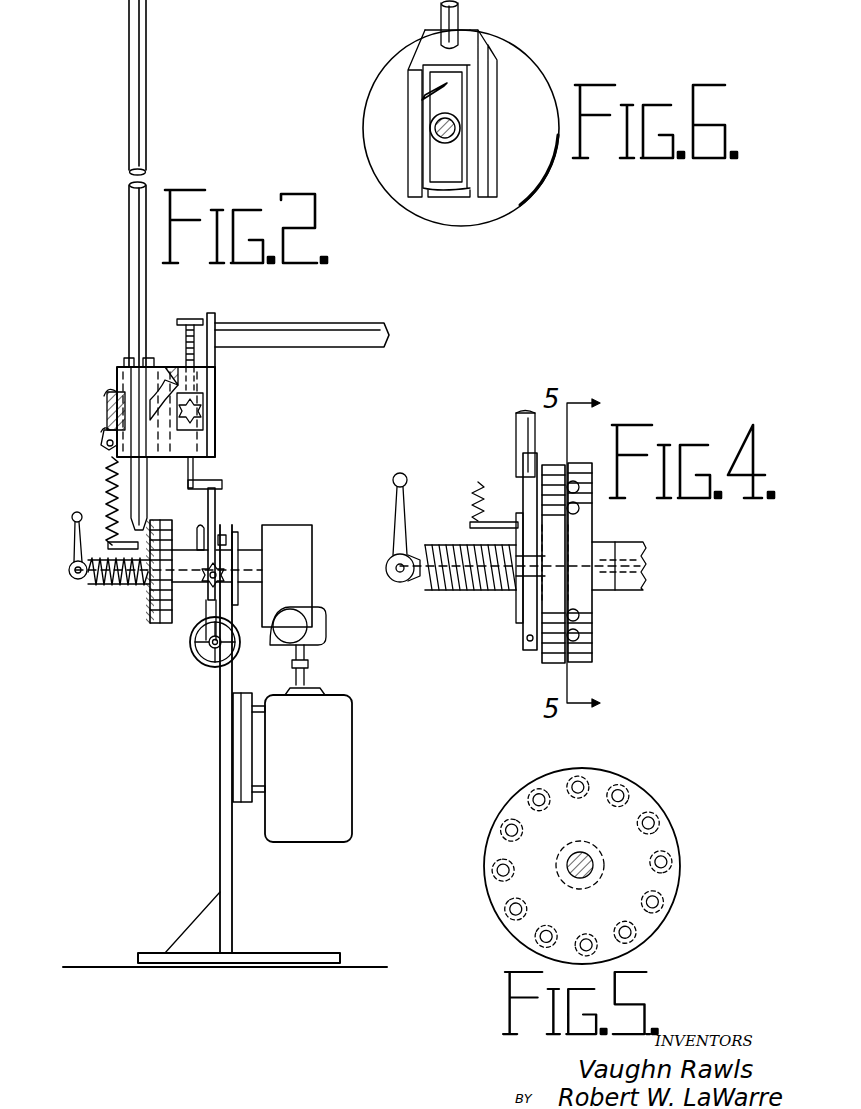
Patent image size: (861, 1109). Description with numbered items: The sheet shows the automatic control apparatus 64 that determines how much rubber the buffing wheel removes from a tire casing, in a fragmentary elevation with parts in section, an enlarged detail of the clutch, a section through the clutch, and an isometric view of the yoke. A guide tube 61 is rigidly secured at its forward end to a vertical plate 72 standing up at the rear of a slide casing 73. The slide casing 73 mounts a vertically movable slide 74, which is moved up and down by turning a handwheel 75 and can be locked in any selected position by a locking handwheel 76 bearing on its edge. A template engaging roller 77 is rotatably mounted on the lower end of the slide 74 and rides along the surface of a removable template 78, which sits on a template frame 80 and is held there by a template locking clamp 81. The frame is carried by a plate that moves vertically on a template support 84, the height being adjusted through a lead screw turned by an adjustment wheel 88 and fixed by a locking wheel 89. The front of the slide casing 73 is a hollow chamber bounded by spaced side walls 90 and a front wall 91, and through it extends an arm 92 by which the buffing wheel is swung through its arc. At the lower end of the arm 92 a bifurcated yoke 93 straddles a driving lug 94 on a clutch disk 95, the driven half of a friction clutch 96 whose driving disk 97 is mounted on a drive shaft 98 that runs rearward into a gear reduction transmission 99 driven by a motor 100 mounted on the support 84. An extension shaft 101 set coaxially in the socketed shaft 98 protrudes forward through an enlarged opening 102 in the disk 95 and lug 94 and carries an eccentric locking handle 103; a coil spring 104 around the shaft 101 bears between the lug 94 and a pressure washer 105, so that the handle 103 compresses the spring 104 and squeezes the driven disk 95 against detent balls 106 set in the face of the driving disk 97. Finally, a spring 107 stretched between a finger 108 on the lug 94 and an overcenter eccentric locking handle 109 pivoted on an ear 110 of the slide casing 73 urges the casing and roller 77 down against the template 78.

In FIG. 2, the guide tube 61 is at (337, 323).
In FIG. 2, the control apparatus 64 is at (262, 496).
In FIG. 2, the vertical plate 72 is at (215, 383).
In FIG. 2, the slide casing 73 is at (216, 436).
In FIG. 2, the slide 74 is at (196, 470).
In FIG. 2, the handwheel 75 is at (190, 319).
In FIG. 2, the locking handwheel 76 is at (203, 410).
In FIG. 2, the template engaging roller 77 is at (222, 478).
In FIG. 2, the template 78 is at (215, 514).
In FIG. 2, the template frame 80 is at (238, 534).
In FIG. 2, the template locking clamp 81 is at (197, 545).
In FIG. 2, the template support 84 is at (219, 730).
In FIG. 2, the adjustment wheel 88 is at (195, 658).
In FIG. 2, the locking wheel 89 is at (205, 585).
In FIG. 2, the side walls 90 is at (126, 364).
In FIG. 2, the front wall 91 is at (110, 395).
In FIG. 2, the arm 92 is at (129, 310).
In FIG. 4, the arm 92 is at (516, 424).
In FIG. 6, the arm 92 is at (458, 18).
In FIG. 4, the bifurcated yoke 93 is at (525, 640).
In FIG. 6, the bifurcated yoke 93 is at (497, 90).
In FIG. 4, the driving lug 94 is at (518, 618).
In FIG. 6, the driving lug 94 is at (418, 140).
In FIG. 4, the clutch disk 95 is at (553, 663).
In FIG. 6, the clutch disk 95 is at (542, 195).
In FIG. 2, the friction clutch 96 is at (152, 640).
In FIG. 4, the driving disk 97 is at (592, 640).
In FIG. 5, the driving disk 97 is at (680, 830).
In FIG. 4, the drive shaft 98 is at (630, 590).
In FIG. 2, the gear reduction transmission 99 is at (315, 566).
In FIG. 2, the motor 100 is at (352, 705).
In FIG. 4, the extension shaft 101 is at (405, 582).
In FIG. 5, the extension shaft 101 is at (590, 858).
In FIG. 4, the opening 102 is at (520, 590).
In FIG. 6, the opening 102 is at (445, 143).
In FIG. 2, the eccentric locking handle 103 is at (73, 552).
In FIG. 4, the eccentric locking handle 103 is at (470, 548).
In FIG. 2, the coil spring 104 is at (110, 590).
In FIG. 4, the coil spring 104 is at (447, 590).
In FIG. 4, the pressure washer 105 is at (455, 510).
In FIG. 5, the detent balls 106 is at (585, 776).
In FIG. 2, the spring 107 is at (108, 492).
In FIG. 4, the spring 107 is at (472, 484).
In FIG. 2, the finger 108 is at (123, 545).
In FIG. 4, the finger 108 is at (490, 520).
In FIG. 6, the finger 108 is at (425, 92).
In FIG. 2, the overcenter eccentric locking handle 109 is at (104, 434).
In FIG. 2, the ear 110 is at (106, 443).